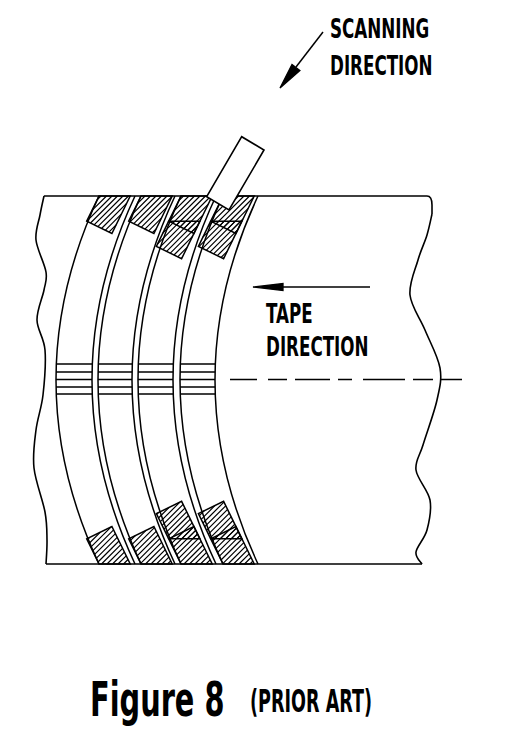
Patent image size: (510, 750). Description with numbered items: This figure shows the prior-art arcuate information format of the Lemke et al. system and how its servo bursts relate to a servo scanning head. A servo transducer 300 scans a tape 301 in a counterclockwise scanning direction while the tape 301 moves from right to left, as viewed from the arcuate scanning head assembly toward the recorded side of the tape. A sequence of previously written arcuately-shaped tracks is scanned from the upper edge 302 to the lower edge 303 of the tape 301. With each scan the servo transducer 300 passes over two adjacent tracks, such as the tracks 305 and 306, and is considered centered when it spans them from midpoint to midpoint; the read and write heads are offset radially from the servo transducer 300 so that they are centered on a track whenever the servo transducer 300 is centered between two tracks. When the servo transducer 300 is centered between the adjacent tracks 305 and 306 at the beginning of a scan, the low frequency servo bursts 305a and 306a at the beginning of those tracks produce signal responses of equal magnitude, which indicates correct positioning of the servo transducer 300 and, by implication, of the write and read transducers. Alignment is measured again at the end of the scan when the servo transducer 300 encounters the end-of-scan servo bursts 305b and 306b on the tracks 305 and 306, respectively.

The servo transducer 300 is at (264, 150).
The tape 301 is at (386, 382).
The upper edge 302 is at (397, 196).
The lower edge 303 is at (387, 567).
The track 305 is at (213, 457).
The low frequency servo burst 305a is at (250, 220).
The end-of-scan servo burst 305b is at (248, 562).
The track 306 is at (166, 416).
The low frequency servo burst 306a is at (187, 200).
The end-of-scan servo burst 306b is at (202, 562).